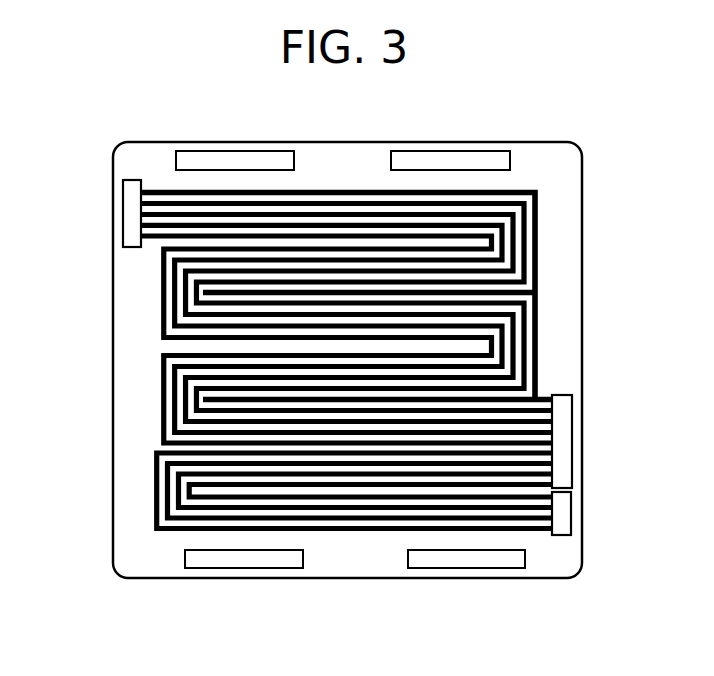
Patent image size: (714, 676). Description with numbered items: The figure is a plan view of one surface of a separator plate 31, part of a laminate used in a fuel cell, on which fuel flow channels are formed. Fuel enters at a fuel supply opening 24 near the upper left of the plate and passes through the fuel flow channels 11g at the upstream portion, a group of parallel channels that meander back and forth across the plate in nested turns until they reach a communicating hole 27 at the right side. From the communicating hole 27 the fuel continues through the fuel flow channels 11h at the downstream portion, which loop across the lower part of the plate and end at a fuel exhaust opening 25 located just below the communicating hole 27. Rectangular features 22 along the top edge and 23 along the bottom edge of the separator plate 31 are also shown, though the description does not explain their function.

The separator plate 31 is at (584, 187).
The upper fixing portions 22 is at (253, 160).
The lower fixing portions 23 is at (461, 569).
The fuel supply opening 24 is at (131, 198).
The communicating hole 27 is at (560, 430).
The fuel exhaust opening 25 is at (562, 527).
The fuel flow channels at an upstream portion 11g is at (530, 237).
The fuel flow channels at a downstream portion 11h is at (158, 489).